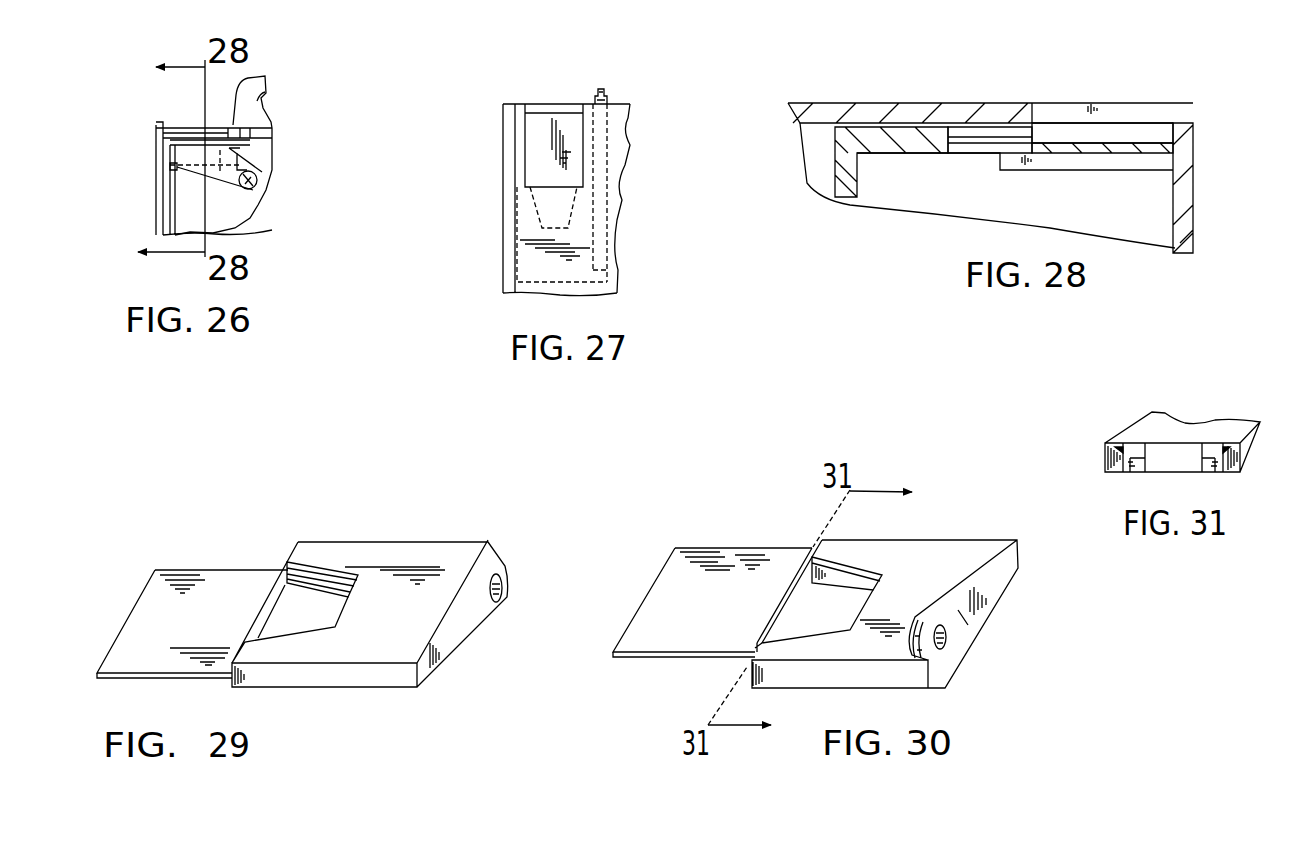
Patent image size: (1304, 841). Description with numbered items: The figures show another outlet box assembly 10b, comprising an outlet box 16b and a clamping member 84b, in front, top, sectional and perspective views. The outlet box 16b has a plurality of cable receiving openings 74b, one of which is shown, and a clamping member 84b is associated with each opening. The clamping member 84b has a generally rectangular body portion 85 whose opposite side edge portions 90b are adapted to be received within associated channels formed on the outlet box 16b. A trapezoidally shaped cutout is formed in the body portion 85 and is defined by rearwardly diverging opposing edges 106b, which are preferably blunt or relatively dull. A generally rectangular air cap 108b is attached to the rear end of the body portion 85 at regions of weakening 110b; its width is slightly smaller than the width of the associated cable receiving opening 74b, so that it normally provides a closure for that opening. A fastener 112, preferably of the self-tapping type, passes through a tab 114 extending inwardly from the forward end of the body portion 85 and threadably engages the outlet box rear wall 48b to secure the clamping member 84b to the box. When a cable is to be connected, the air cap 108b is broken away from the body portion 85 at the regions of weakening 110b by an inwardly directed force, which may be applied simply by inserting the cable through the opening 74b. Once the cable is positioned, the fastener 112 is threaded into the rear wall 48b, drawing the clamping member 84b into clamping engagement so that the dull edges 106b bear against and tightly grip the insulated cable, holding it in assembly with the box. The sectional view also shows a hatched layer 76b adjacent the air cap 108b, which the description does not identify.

In FIG. 26, the outlet box assembly 10b is at (301, 94).
In FIG. 27, the outlet box assembly 10b is at (561, 96).
In FIG. 28, the outlet box assembly 10b is at (979, 93).
In FIG. 26, the outlet box 16b is at (143, 148).
In FIG. 27, the outlet box 16b is at (495, 211).
In FIG. 28, the outlet box 16b is at (920, 99).
In FIG. 26, the outlet box rear wall 48b is at (218, 222).
In FIG. 27, the outlet box rear wall 48b is at (543, 108).
In FIG. 28, the outlet box rear wall 48b is at (1186, 168).
In FIG. 27, the cable receiving opening 74b is at (525, 138).
In FIG. 28, the cable receiving opening 74b is at (1127, 115).
In FIG. 28, the adhesive layer 76b is at (1110, 147).
In FIG. 26, the clamping member 84b is at (228, 194).
In FIG. 27, the clamping member 84b is at (556, 287).
In FIG. 28, the clamping member 84b is at (872, 159).
In FIG. 29, the clamping member 84b is at (374, 523).
In FIG. 30, the clamping member 84b is at (955, 525).
In FIG. 31, the clamping member 84b is at (1177, 405).
In FIG. 28, the body portion 85 is at (887, 137).
In FIG. 29, the body portion 85 is at (438, 552).
In FIG. 30, the body portion 85 is at (958, 550).
In FIG. 29, the side edge portions 90b is at (327, 555).
In FIG. 30, the side edge portions 90b is at (871, 550).
In FIG. 28, the opposing edges 106b is at (987, 140).
In FIG. 29, the opposing edges 106b is at (308, 586).
In FIG. 31, the opposing edges 106b is at (1137, 467).
In FIG. 27, the air cap 108b is at (567, 150).
In FIG. 28, the air cap 108b is at (1086, 155).
In FIG. 29, the air cap 108b is at (203, 590).
In FIG. 30, the air cap 108b is at (679, 584).
In FIG. 30, the regions of weakening 110b is at (812, 551).
In FIG. 31, the regions of weakening 110b is at (1122, 445).
In FIG. 26, the fastener 112 is at (257, 186).
In FIG. 27, the fastener 112 is at (607, 167).
In FIG. 26, the tab 114 is at (193, 170).
In FIG. 29, the tab 114 is at (465, 620).
In FIG. 30, the tab 114 is at (997, 578).